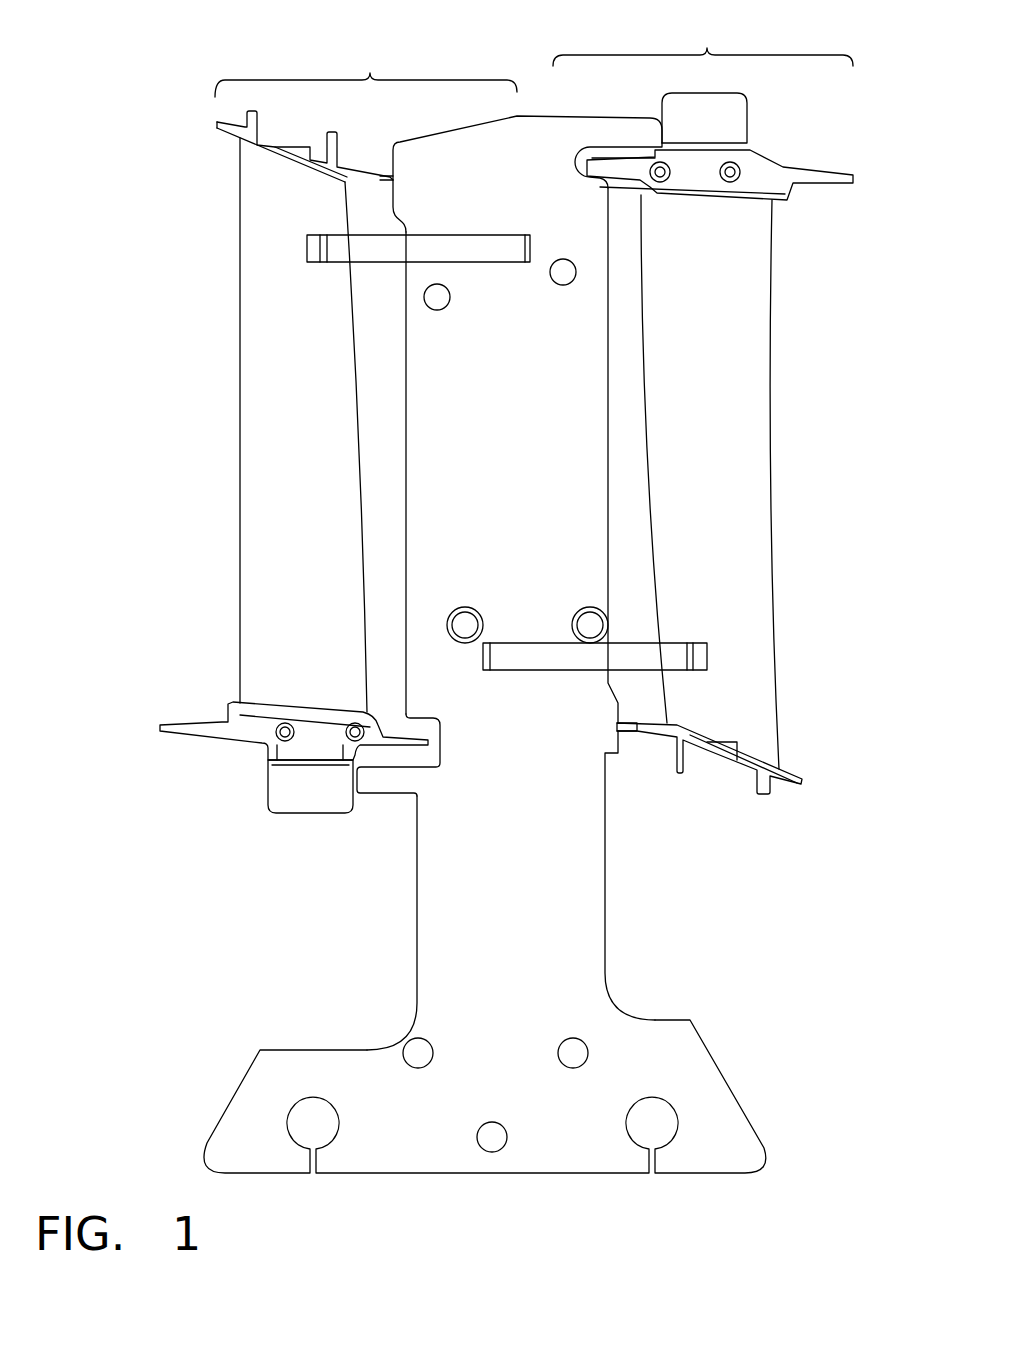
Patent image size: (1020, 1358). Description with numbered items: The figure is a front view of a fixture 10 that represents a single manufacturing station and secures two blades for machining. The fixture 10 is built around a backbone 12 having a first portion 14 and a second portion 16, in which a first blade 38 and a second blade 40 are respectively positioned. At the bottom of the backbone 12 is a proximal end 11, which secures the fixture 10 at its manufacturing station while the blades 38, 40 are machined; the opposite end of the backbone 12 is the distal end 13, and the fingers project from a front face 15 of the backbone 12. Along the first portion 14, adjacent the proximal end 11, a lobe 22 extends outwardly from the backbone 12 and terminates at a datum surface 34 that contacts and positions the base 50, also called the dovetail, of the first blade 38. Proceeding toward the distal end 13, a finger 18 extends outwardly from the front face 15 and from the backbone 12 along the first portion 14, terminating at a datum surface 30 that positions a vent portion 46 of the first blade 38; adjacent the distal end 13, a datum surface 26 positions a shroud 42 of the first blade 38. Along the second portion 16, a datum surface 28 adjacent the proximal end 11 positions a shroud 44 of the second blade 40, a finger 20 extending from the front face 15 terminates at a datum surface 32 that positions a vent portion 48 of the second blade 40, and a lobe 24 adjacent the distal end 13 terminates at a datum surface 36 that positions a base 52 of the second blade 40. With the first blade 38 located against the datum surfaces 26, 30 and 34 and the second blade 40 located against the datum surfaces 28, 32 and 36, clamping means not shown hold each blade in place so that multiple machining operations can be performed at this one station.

The fixture 10 is at (768, 1200).
The proximal end 11 is at (407, 1173).
The backbone 12 is at (608, 457).
The distal end 13 is at (470, 124).
The first portion 14 is at (368, 72).
The front face 15 is at (583, 880).
The second portion 16 is at (707, 50).
The finger 18 is at (432, 235).
The finger 20 is at (540, 643).
The lobe 22 is at (378, 795).
The lobe 24 is at (608, 117).
The datum surface 26 is at (392, 158).
The datum surface 28 is at (625, 740).
The datum surface 30 is at (300, 244).
The datum surface 32 is at (718, 648).
The datum surface 34 is at (347, 786).
The datum surface 36 is at (668, 130).
The first blade 38 is at (258, 423).
The second blade 40 is at (746, 276).
The shroud 42 is at (280, 145).
The shroud 44 is at (747, 763).
The vent portion 46 is at (238, 332).
The vent portion 48 is at (765, 385).
The base 50 is at (268, 787).
The base 52 is at (748, 127).